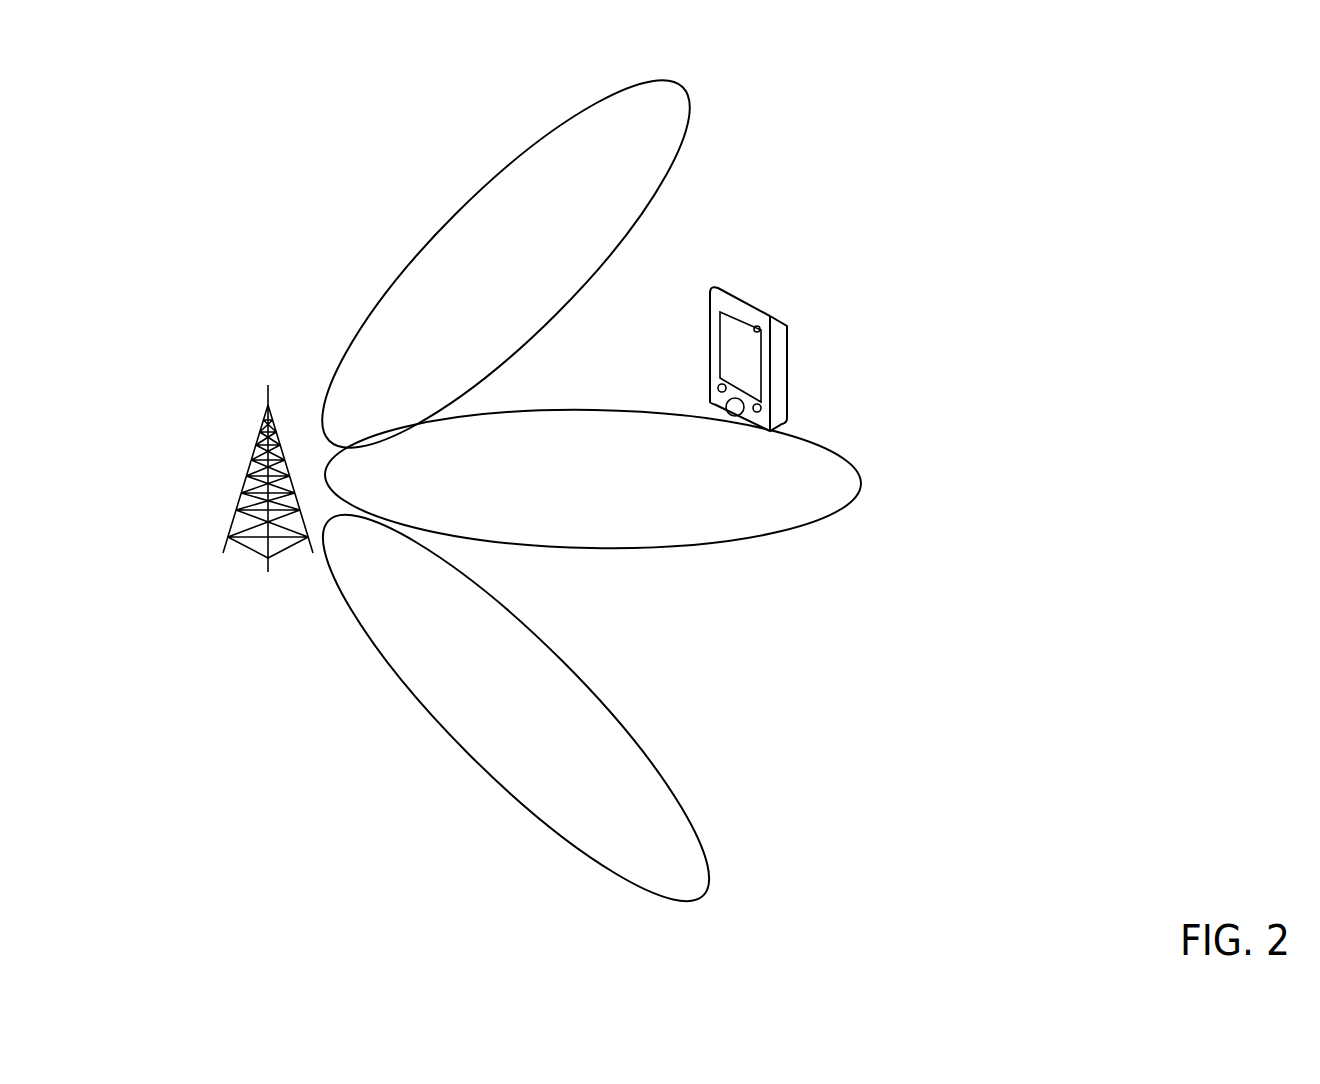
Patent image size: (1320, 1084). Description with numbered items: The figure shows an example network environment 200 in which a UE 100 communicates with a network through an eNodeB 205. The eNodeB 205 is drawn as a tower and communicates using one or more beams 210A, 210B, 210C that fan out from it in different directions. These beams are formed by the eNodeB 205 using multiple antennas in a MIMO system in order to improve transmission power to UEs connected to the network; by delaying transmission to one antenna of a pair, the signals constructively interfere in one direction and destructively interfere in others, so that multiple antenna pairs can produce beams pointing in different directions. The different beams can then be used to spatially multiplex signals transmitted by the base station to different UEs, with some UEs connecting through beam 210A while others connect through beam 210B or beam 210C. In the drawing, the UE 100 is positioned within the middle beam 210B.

The network environment 200 is at (1050, 118).
The beam 210A is at (690, 87).
The beam 210B is at (838, 445).
The beam 210C is at (697, 813).
The eNodeB 205 is at (237, 385).
The UE 100 is at (788, 278).